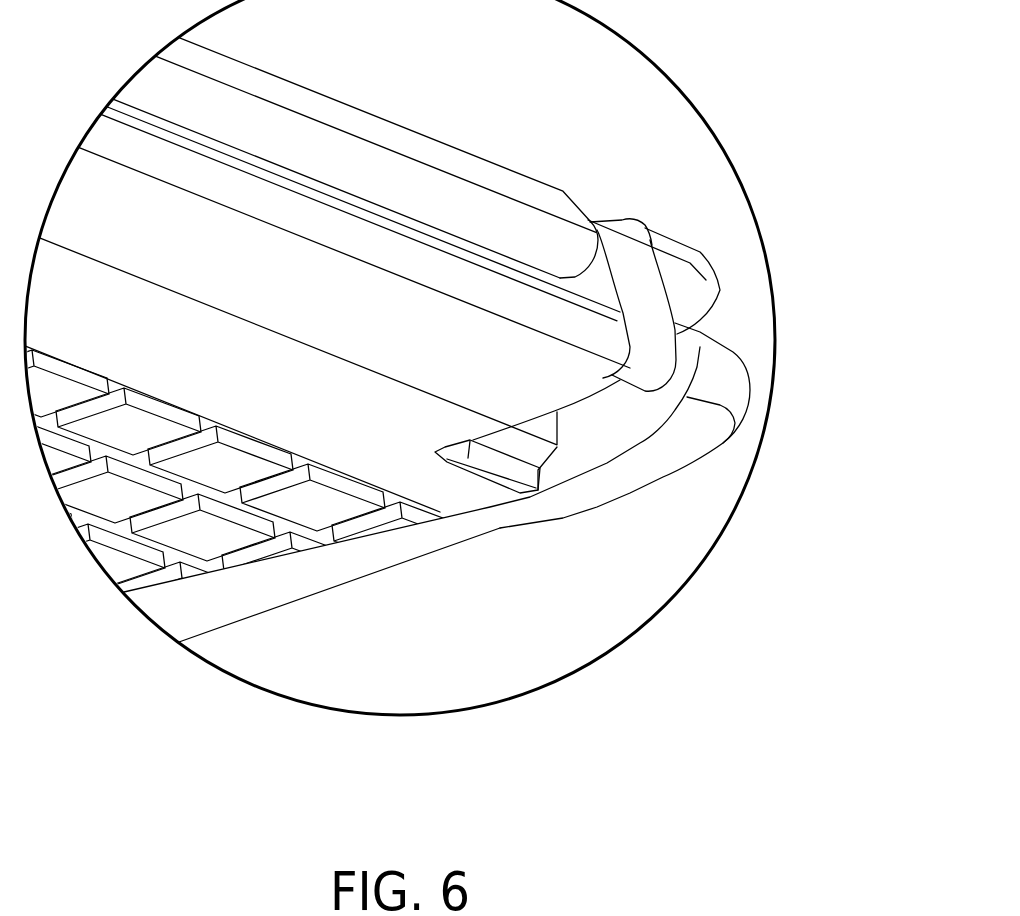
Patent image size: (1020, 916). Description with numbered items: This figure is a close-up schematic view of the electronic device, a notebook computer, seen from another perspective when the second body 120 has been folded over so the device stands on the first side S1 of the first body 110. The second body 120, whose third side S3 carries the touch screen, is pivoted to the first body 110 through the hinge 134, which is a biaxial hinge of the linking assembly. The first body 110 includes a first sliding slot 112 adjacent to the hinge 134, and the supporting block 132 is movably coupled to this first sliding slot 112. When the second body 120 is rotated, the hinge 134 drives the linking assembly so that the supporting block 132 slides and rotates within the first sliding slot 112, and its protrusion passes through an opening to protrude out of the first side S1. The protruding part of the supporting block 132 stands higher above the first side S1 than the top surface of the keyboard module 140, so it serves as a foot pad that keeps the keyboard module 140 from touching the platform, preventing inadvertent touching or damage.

The first body 110 is at (750, 368).
The first sliding slot 112 is at (583, 413).
The second body 120 is at (716, 262).
The supporting block 132 is at (503, 465).
The hinge 134 is at (633, 277).
The keyboard module 140 is at (335, 507).
The first side S1 is at (283, 580).
The third side S3 is at (370, 113).